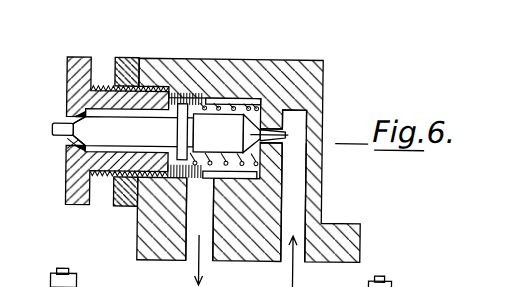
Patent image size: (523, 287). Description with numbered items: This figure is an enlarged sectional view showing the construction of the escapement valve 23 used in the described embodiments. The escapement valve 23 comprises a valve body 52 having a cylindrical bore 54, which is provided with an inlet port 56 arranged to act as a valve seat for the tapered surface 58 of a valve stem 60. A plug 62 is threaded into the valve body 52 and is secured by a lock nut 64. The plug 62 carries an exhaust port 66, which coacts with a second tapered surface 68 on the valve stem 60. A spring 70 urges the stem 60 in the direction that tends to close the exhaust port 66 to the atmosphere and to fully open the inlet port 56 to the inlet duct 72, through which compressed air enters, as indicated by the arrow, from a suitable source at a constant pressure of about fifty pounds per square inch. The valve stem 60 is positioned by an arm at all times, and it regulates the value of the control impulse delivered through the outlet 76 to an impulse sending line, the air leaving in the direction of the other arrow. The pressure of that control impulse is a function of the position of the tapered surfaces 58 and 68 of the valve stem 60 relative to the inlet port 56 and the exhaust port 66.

The escapement valve 23 is at (373, 196).
The valve body 52 is at (320, 78).
The cylindrical bore 54 is at (232, 90).
The inlet port 56 is at (285, 103).
The tapered surface 58 is at (262, 137).
The valve stem 60 is at (227, 140).
The plug 62 is at (78, 62).
The lock nut 64 is at (132, 58).
The exhaust port 66 is at (77, 117).
The tapered surface 68 is at (80, 133).
The spring 70 is at (215, 100).
The inlet duct 72 is at (306, 204).
The outlet 76 is at (210, 210).